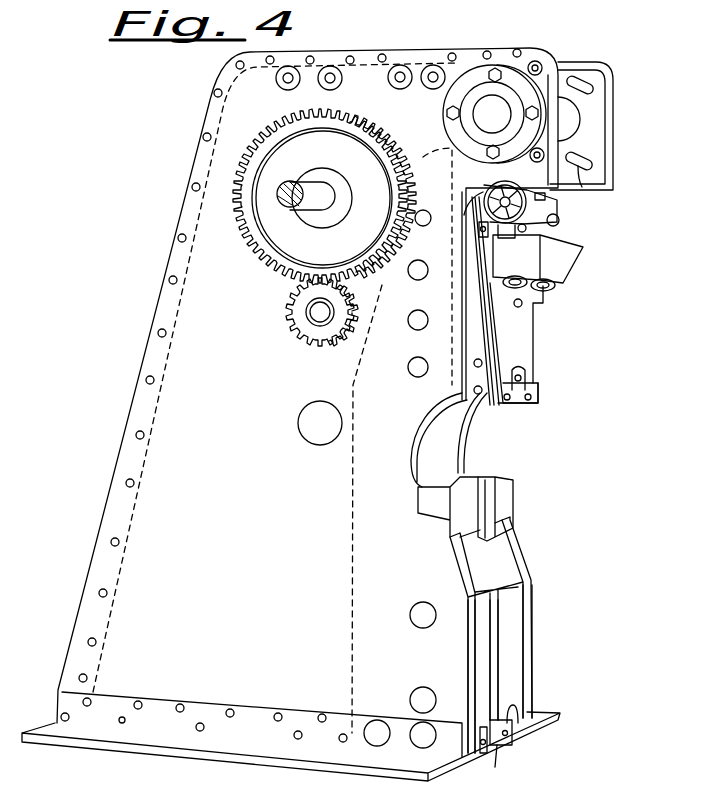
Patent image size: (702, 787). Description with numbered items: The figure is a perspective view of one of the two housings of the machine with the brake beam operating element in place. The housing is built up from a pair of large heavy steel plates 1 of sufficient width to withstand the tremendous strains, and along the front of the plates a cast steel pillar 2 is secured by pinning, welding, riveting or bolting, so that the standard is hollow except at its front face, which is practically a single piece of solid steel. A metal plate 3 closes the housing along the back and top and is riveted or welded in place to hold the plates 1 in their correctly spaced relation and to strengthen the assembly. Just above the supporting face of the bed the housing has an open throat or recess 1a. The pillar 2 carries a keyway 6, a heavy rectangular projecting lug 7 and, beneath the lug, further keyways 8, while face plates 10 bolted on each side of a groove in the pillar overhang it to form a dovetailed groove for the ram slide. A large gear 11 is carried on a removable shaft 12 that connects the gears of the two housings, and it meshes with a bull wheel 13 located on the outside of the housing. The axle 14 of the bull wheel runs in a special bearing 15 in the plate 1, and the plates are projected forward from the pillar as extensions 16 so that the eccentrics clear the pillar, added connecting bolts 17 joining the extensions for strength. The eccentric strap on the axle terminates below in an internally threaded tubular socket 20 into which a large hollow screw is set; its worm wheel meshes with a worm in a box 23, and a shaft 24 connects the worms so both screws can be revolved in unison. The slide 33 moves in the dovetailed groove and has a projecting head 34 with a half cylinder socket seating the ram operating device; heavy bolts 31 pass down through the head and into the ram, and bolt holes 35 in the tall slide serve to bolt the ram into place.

The steel plate 1 is at (173, 470).
The open throat 1a is at (440, 448).
The cast steel pillar 2 is at (345, 540).
The metal plate 3 is at (457, 63).
The keyway 6 is at (485, 503).
The projecting lug 7 is at (508, 647).
The keyway 8 is at (492, 765).
The face plate 10 is at (467, 347).
The large gear 11 is at (308, 340).
The shaft 12 is at (313, 313).
The bull wheel 13 is at (324, 196).
The axle 14 is at (487, 113).
The bearing 15 is at (532, 95).
The extension 16 is at (550, 118).
The connecting bolt 17 is at (540, 100).
The tubular socket 20 is at (526, 230).
The box 23 is at (530, 213).
The shaft 24 is at (559, 220).
The bolt 31 is at (543, 290).
The slide 33 is at (520, 340).
The head 34 is at (573, 253).
The bolt hole 35 is at (537, 397).